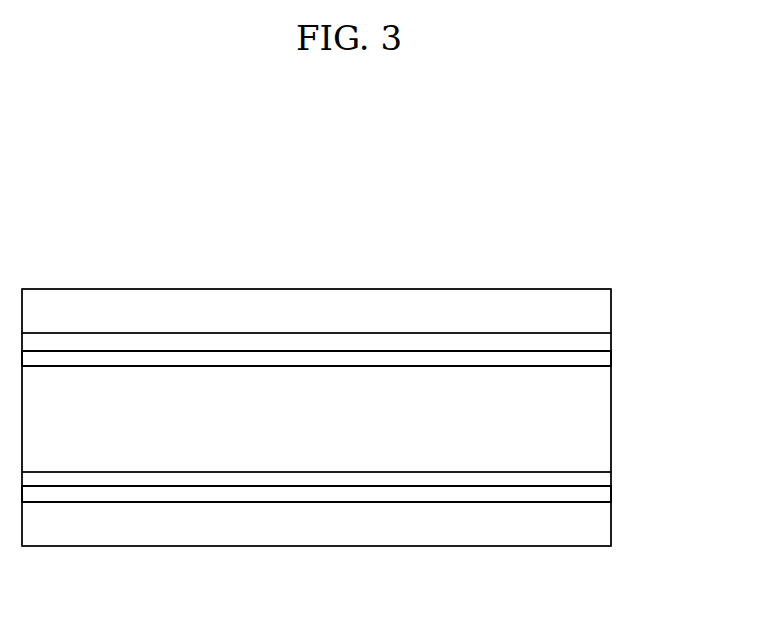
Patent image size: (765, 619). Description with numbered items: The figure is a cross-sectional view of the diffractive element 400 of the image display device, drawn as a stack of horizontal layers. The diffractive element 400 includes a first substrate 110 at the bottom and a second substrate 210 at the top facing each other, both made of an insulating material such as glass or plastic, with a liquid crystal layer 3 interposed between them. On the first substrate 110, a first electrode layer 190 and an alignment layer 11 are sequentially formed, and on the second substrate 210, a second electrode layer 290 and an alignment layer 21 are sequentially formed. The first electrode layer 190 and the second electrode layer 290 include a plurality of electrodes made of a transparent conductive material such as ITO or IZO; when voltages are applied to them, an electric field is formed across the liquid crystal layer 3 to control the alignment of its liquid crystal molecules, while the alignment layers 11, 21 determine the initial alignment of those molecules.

The diffractive element 400 is at (333, 209).
The second substrate 210 is at (603, 313).
The second electrode layer 290 is at (603, 343).
The alignment layer 21 is at (601, 358).
The liquid crystal layer 3 is at (599, 419).
The alignment layer 11 is at (601, 480).
The first electrode layer 190 is at (603, 496).
The first substrate 110 is at (603, 528).